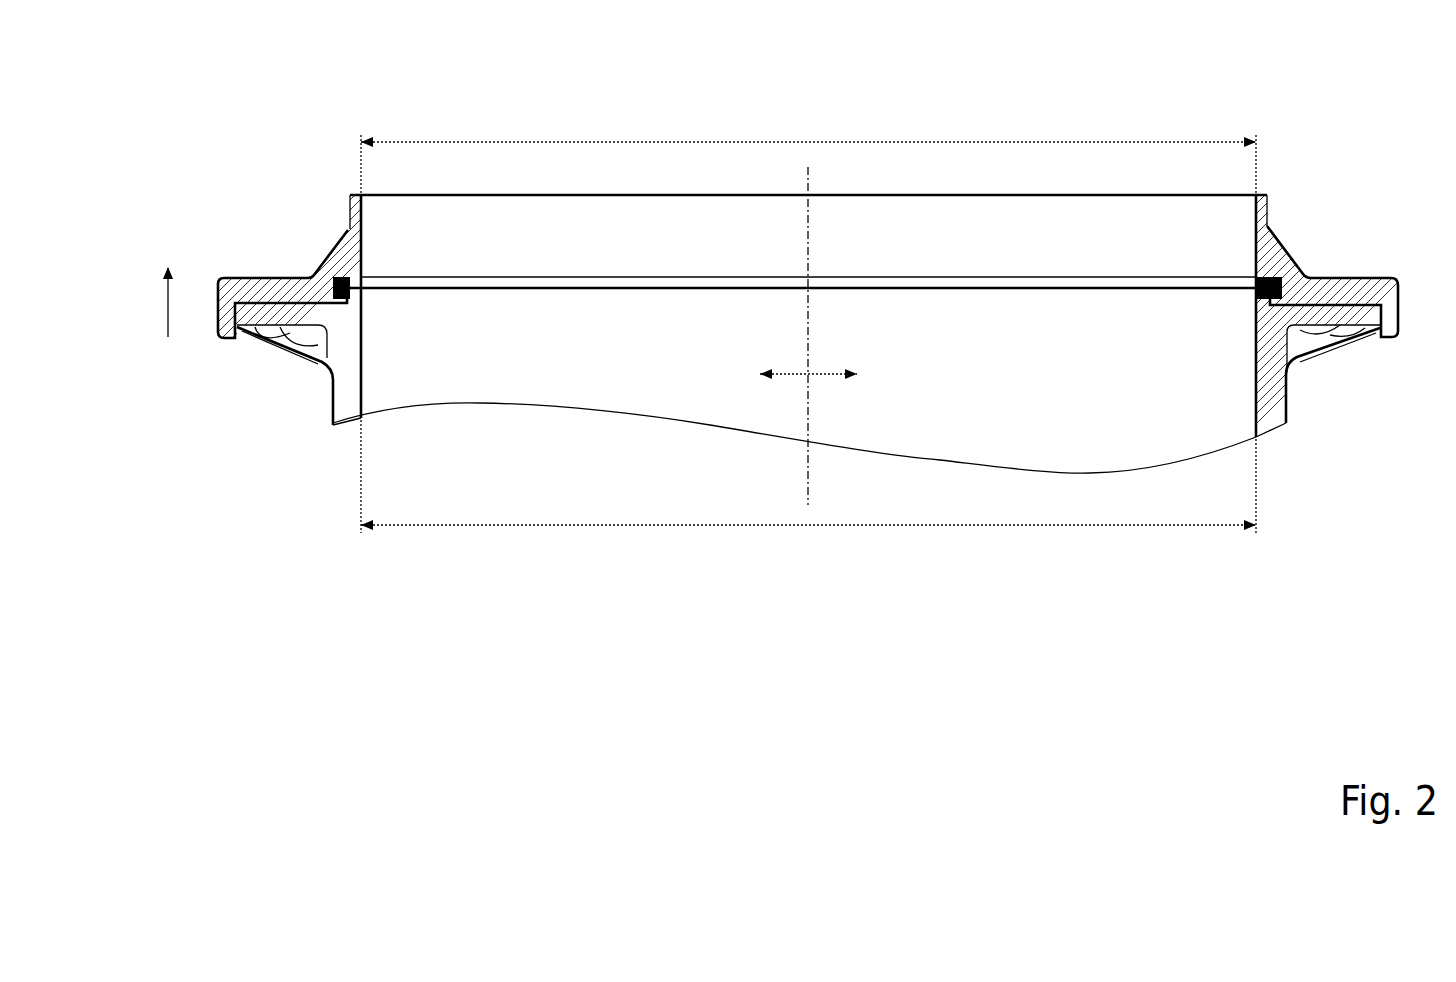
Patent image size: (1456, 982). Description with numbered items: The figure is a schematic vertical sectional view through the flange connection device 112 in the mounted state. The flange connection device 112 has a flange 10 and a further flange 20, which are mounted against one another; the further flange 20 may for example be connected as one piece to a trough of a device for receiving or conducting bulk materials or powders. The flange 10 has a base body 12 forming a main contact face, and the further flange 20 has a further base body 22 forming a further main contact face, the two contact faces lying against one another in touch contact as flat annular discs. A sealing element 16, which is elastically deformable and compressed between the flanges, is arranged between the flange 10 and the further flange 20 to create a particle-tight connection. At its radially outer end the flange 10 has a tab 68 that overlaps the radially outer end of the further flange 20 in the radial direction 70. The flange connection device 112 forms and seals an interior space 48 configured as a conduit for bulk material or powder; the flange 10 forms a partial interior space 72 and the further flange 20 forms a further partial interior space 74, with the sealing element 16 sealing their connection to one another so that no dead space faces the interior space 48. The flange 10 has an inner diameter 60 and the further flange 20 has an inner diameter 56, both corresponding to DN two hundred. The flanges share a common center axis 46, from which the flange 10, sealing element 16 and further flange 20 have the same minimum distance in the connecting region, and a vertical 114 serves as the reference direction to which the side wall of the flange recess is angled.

The flange 10 is at (1283, 232).
The base body 12 is at (1285, 250).
The sealing element 16 is at (1287, 283).
The further flange 20 is at (1335, 353).
The further base body 22 is at (1355, 310).
The common center axis 46 is at (810, 493).
The interior space 48 is at (1029, 273).
The inner diameter 56 is at (808, 528).
The inner diameter 60 is at (810, 140).
The tab 68 is at (231, 323).
The radial direction 70 is at (795, 378).
The partial interior space 72 is at (403, 246).
The further partial interior space 74 is at (403, 358).
The flange connection device 112 is at (261, 223).
The vertical 114 is at (167, 305).